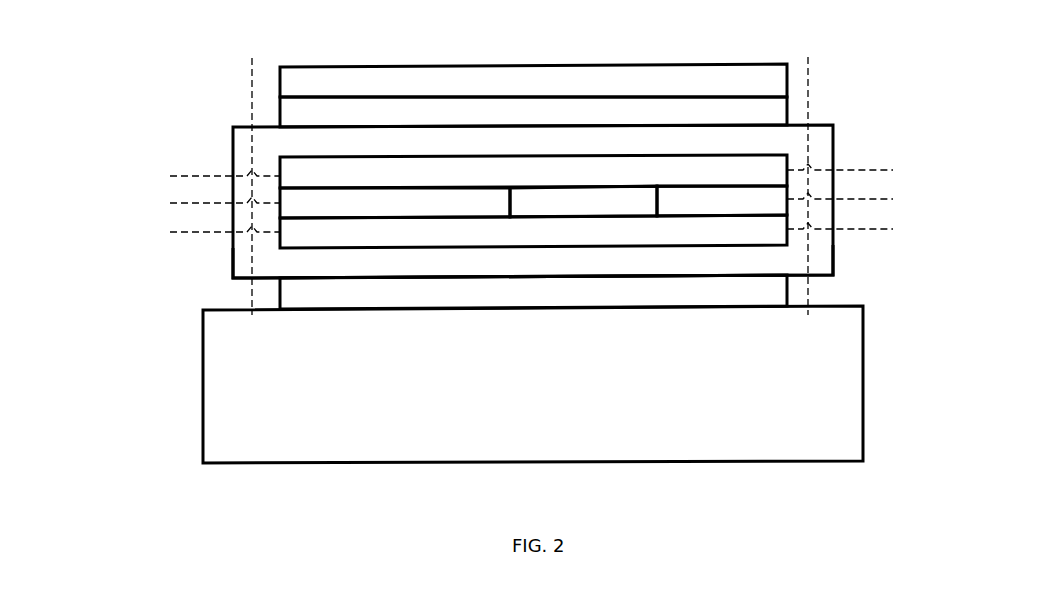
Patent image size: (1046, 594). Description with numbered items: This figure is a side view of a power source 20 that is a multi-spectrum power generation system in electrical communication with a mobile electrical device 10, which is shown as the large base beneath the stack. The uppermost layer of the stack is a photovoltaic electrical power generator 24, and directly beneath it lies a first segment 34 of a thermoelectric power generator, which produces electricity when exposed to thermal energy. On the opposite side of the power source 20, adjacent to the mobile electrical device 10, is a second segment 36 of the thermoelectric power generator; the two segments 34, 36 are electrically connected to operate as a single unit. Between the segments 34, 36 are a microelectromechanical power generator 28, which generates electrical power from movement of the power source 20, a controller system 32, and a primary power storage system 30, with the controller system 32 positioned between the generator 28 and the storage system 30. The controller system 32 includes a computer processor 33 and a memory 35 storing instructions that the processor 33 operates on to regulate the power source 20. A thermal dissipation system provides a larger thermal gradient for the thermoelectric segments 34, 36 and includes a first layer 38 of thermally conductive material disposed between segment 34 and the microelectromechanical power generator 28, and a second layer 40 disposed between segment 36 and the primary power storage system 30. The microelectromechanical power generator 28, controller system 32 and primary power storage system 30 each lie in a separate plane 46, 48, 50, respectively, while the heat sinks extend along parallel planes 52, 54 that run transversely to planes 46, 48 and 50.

The mobile electrical device 10 is at (533, 384).
The power source 20 is at (197, 117).
The photovoltaic electrical power generator 24 is at (533, 80).
The microelectromechanical power generator 28 is at (533, 171).
The primary power storage system 30 is at (533, 231).
The controller system 32 is at (383, 202).
The computer processor 33 is at (583, 201).
The first segment of thermoelectric power generator 34 is at (533, 112).
The memory 35 is at (722, 201).
The second segment of thermoelectric power generator 36 is at (533, 292).
The first layer of thermally conductive material 38 is at (533, 201).
The second layer of thermally conductive material 40 is at (533, 261).
The plane 46 is at (170, 176).
The plane 48 is at (170, 203).
The plane 50 is at (170, 232).
The plane 52 is at (252, 58).
The plane 54 is at (808, 57).